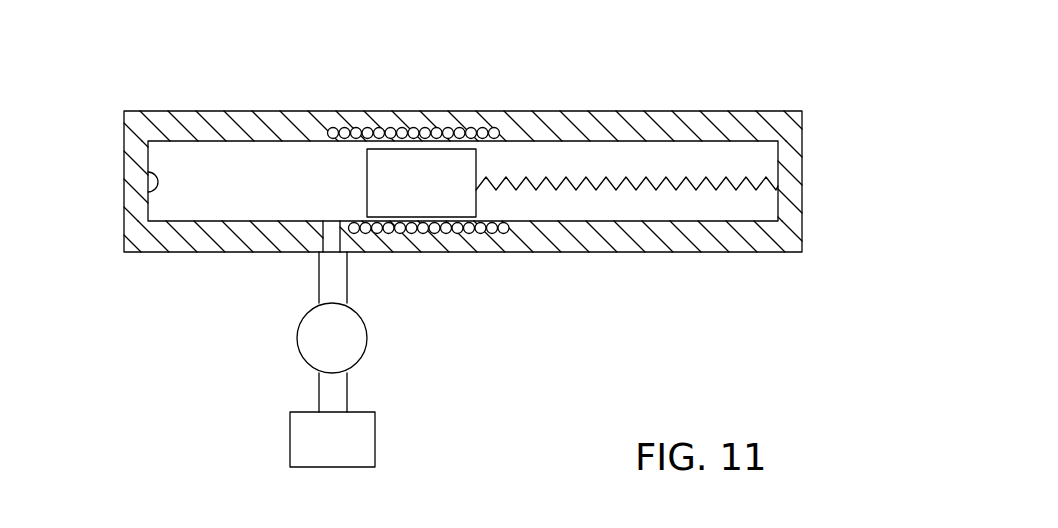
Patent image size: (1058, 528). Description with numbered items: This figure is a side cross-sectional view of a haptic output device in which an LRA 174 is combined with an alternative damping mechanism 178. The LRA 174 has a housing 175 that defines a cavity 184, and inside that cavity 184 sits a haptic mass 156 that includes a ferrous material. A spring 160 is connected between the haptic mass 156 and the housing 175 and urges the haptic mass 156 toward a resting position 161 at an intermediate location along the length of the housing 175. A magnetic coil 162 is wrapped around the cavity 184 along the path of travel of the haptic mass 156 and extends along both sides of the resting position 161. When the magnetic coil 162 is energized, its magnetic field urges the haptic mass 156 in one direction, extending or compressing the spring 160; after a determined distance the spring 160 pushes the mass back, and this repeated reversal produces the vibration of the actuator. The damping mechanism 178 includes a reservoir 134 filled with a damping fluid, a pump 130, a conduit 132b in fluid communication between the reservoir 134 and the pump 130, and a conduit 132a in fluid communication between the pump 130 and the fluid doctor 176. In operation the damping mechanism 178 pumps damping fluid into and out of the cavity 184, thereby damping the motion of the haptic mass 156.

The LRA 174 is at (690, 110).
The housing 175 is at (238, 110).
The cavity 184 is at (146, 174).
The haptic mass 156 is at (367, 175).
The fluid doctor 176 is at (327, 238).
The spring 160 is at (718, 185).
The resting position 161 is at (427, 253).
The magnetic coil 162 is at (510, 232).
The conduit 132a is at (318, 265).
The pump 130 is at (298, 335).
The conduit 132b is at (318, 385).
The reservoir 134 is at (290, 440).
The damping mechanism 178 is at (317, 359).